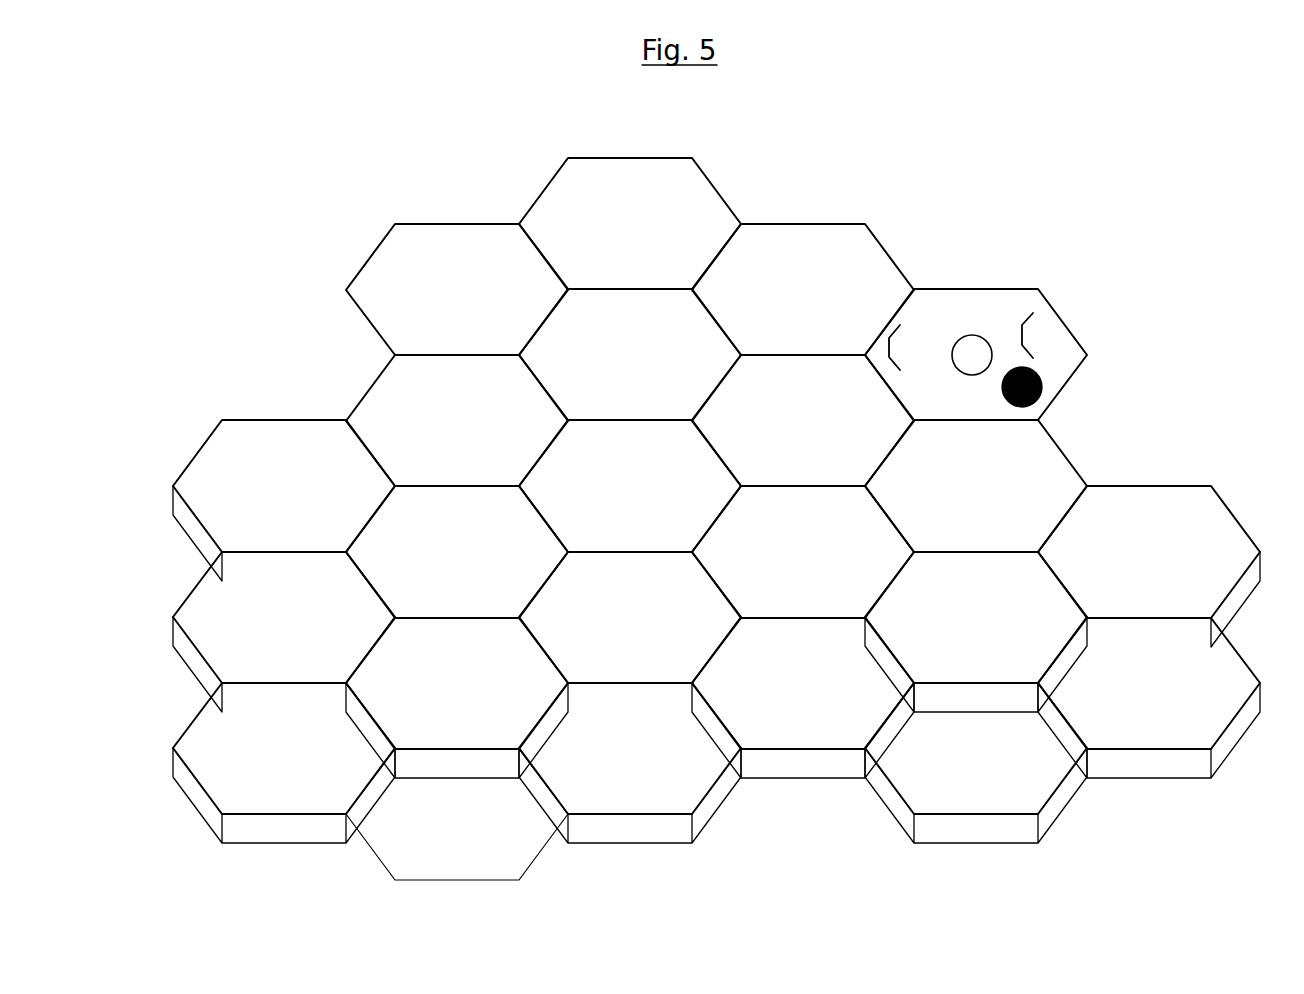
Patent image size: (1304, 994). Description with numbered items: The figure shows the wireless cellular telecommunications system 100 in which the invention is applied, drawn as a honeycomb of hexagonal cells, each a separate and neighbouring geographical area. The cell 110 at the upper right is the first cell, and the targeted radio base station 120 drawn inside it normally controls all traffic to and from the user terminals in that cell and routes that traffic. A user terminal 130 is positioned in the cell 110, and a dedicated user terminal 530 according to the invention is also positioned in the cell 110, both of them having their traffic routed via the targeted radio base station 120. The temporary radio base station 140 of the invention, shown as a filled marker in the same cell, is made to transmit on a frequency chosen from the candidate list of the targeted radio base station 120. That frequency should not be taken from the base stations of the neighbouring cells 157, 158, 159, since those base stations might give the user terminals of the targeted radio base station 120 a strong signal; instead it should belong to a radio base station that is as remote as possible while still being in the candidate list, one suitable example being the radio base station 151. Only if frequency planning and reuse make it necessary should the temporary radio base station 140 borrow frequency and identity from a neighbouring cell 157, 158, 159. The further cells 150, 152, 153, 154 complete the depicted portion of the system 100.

The wireless cellular system 100 is at (287, 307).
The cell 110 is at (1037, 290).
The targeted radio base station 120 is at (972, 353).
The user terminal 130 is at (910, 342).
The dedicated user terminal 530 is at (1040, 333).
The temporary radio base station 140 is at (1045, 390).
The hexagonal cell 150 is at (803, 552).
The remote radio base station 151 is at (976, 632).
The hexagonal cell 152 is at (1149, 698).
The hexagonal cell 153 is at (803, 698).
The hexagonal cell 154 is at (976, 763).
The neighbouring cell 157 is at (803, 420).
The neighbouring cell 158 is at (976, 486).
The neighbouring cell 159 is at (1149, 566).